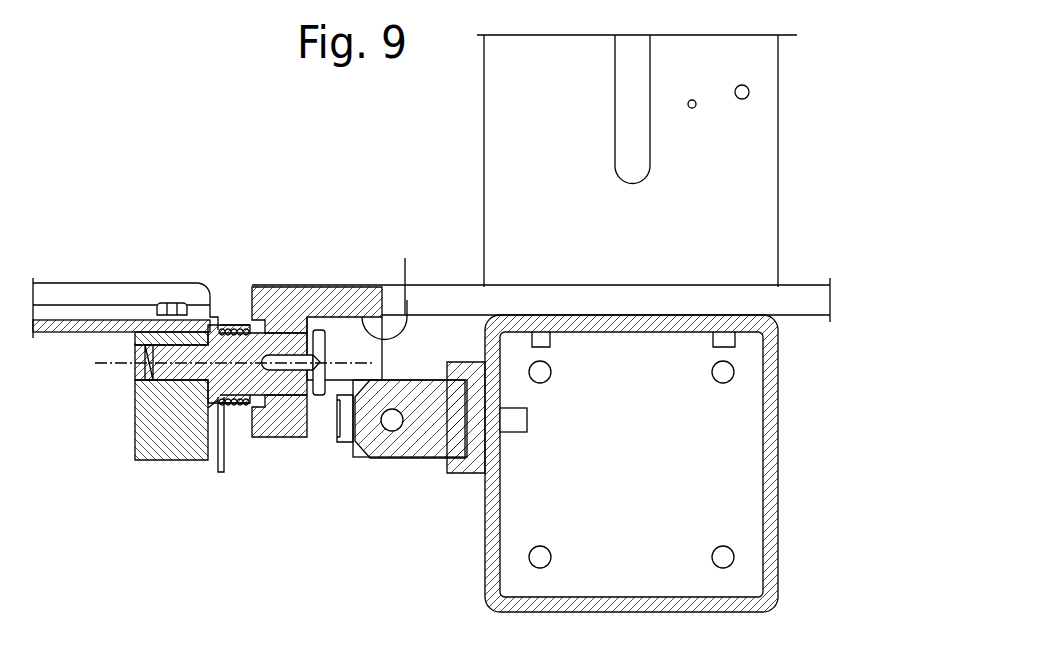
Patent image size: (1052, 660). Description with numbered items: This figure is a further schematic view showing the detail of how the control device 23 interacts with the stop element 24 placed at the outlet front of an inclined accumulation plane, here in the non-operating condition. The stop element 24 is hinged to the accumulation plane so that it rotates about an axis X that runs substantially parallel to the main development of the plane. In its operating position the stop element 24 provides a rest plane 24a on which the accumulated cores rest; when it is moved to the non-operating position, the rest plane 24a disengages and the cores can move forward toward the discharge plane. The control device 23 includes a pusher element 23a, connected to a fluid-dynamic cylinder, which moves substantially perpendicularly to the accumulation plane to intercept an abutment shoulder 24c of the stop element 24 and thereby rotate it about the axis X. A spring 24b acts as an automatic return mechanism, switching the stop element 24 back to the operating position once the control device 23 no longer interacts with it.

The control device 23 is at (425, 459).
The pusher element 23a is at (362, 458).
The stop element 24 is at (290, 300).
The rest plane 24a is at (240, 427).
The spring 24b is at (232, 322).
The abutment shoulder 24c is at (405, 258).
The axis X is at (108, 363).